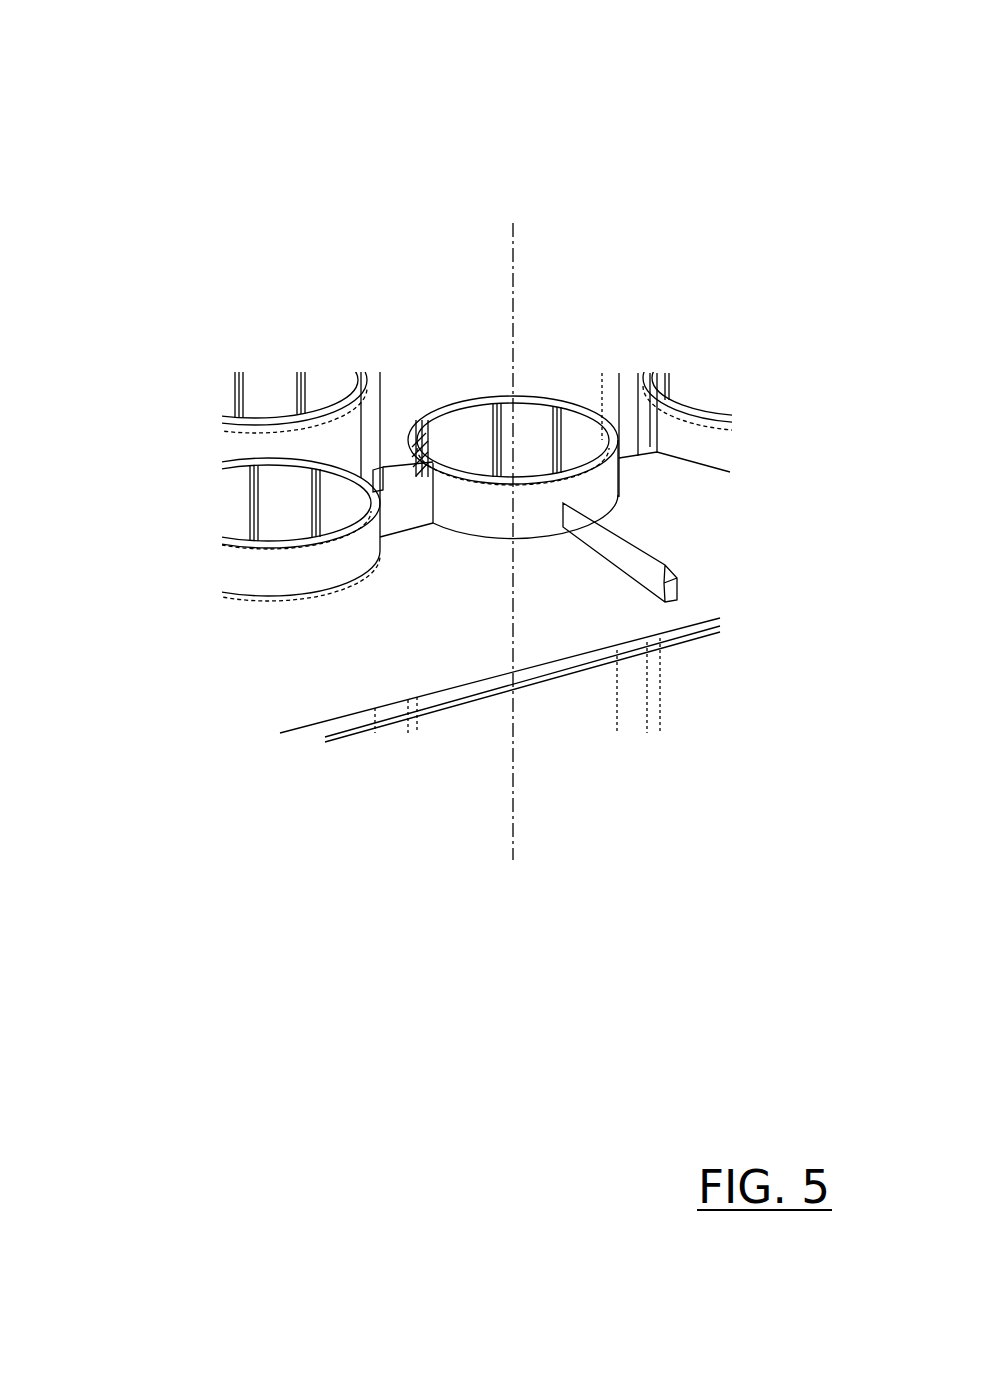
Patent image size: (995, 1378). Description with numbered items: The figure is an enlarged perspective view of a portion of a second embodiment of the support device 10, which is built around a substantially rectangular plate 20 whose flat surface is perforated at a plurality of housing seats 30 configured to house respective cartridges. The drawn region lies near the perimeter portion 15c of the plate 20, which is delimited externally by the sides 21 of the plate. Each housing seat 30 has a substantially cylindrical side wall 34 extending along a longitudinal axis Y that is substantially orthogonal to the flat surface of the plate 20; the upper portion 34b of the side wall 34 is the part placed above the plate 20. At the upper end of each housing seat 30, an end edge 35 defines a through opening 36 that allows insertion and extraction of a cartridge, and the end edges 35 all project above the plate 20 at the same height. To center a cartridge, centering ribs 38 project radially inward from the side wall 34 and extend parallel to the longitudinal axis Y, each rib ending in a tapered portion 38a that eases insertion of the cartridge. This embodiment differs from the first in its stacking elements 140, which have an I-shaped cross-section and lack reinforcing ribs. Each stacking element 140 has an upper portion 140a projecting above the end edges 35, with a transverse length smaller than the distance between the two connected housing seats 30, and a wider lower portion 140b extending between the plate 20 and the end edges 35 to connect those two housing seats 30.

The support device 10 is at (300, 97).
The perimeter portion 15c is at (412, 658).
The plate 20 is at (441, 706).
The sides 21 is at (363, 722).
The housing seats 30 is at (243, 460).
The side wall 34 is at (317, 592).
The upper portion of the side wall 34b is at (257, 580).
The end edge 35 is at (230, 548).
The through opening 36 is at (243, 513).
The centering ribs 38 is at (563, 437).
The tapered portion 38a is at (500, 400).
The stacking elements 140 is at (400, 510).
The upper portion of the stacking element 140a is at (397, 483).
The lower portion of the stacking element 140b is at (418, 503).
The longitudinal axis Y is at (513, 833).